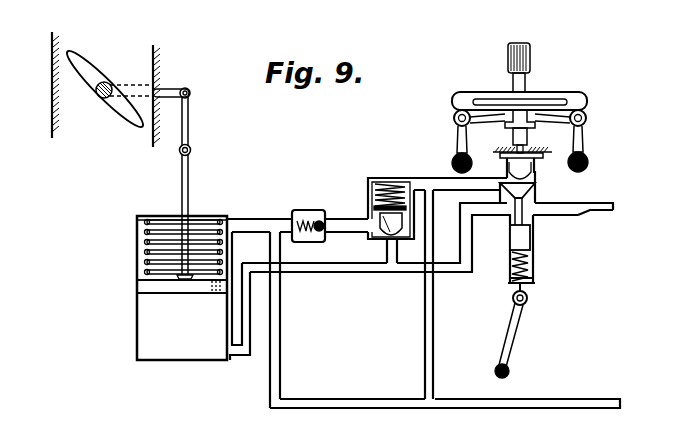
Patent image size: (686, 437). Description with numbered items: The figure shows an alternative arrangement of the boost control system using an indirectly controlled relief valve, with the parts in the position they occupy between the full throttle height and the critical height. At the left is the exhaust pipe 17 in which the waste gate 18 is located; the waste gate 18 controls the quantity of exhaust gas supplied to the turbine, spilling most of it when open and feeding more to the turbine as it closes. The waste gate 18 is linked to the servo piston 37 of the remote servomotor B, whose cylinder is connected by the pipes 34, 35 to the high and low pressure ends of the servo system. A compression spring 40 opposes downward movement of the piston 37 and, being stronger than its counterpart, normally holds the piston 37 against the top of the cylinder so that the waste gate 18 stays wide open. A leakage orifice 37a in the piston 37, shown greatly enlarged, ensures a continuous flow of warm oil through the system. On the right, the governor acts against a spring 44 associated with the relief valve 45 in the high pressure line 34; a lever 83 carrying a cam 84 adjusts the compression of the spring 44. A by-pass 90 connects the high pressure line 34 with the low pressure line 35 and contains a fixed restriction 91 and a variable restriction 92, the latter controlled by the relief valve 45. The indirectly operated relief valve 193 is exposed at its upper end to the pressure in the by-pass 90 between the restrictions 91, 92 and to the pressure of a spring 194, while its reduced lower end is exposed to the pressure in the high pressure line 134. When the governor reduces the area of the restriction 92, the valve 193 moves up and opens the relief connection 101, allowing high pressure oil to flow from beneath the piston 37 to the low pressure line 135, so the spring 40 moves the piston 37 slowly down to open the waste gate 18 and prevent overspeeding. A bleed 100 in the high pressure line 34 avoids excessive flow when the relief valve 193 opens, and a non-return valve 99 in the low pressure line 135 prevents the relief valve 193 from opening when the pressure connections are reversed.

The exhaust pipe 17 is at (52, 118).
The waste gate 18 is at (69, 52).
The remote servomotor B is at (137, 321).
The compression spring 40 is at (146, 232).
The servo piston 37 is at (137, 285).
The leakage orifice 37a is at (201, 295).
The low pressure line 135 is at (254, 218).
The non-return valve 99 is at (323, 218).
The spring 194 is at (369, 196).
The indirectly operated relief valve 193 is at (376, 238).
The relief connection 101 is at (389, 265).
The high pressure line 134 is at (338, 274).
The by-pass 90 is at (440, 177).
The fixed restriction 91 is at (434, 214).
The variable restriction 92 is at (505, 178).
The relief valve 45 is at (514, 222).
The spring 44 is at (511, 268).
The cam 84 is at (512, 298).
The lever 83 is at (516, 334).
The high pressure line 34 is at (601, 202).
The bleed 100 is at (579, 216).
The low pressure line 35 is at (341, 398).